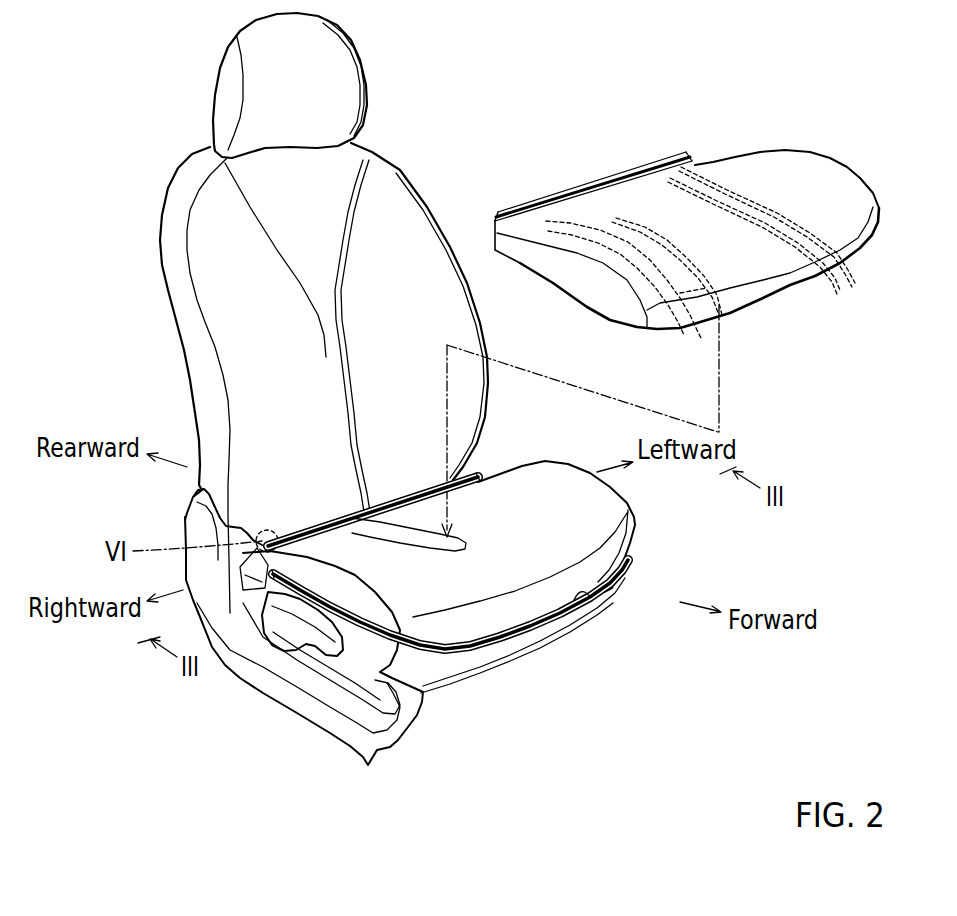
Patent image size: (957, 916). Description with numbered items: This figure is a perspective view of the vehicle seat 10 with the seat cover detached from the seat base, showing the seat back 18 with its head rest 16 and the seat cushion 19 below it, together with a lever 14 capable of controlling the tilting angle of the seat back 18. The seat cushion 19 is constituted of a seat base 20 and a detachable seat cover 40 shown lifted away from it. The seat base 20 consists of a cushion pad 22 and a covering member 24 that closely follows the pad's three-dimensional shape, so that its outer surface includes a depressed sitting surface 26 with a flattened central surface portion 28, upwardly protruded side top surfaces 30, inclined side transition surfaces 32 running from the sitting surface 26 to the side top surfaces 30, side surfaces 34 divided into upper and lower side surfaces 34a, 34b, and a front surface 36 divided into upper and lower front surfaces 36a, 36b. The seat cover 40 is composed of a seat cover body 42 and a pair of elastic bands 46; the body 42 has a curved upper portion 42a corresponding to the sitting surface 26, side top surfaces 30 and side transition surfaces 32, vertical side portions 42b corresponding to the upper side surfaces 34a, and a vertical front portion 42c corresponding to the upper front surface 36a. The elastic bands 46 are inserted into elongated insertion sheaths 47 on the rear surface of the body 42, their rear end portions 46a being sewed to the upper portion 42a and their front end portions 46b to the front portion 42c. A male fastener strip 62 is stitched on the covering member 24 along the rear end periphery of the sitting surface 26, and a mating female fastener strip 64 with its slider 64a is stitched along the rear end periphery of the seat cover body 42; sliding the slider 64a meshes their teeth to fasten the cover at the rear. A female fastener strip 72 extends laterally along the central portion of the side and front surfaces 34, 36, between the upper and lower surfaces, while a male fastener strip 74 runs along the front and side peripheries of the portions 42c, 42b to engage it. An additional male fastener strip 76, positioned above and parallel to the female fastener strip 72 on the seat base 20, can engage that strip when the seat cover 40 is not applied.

The vehicle seat 10 is at (475, 96).
The lever 14 is at (277, 632).
The head rest 16 is at (230, 75).
The seat back 18 is at (192, 323).
The seat cushion 19 is at (555, 444).
The seat base 20 is at (727, 497).
The cushion pad 22 is at (597, 542).
The covering member 24 is at (580, 507).
The sitting surface 26 is at (452, 580).
The central surface portion 28 is at (568, 597).
The side top surfaces 30 is at (573, 465).
The side transition surfaces 32 is at (537, 468).
The side surfaces 34 is at (245, 800).
The upper side surface 34a is at (307, 643).
The lower side surface 34b is at (356, 662).
The front surface 36 is at (580, 750).
The upper front surface 36a is at (492, 633).
The lower front surface 36b is at (527, 655).
The seat cover 40 is at (800, 170).
The seat cover body 42 is at (662, 239).
The curved upper portion 42a is at (717, 263).
The vertical side portions 42b is at (591, 297).
The vertical front portion 42c is at (795, 295).
The elastic bands 46 is at (613, 228).
The rear end portions 46a is at (548, 220).
The front end portions 46b is at (700, 340).
The elongated insertion sheaths 47 is at (587, 203).
The male fastener strip 62 is at (270, 530).
The female fastener strip 64 is at (513, 213).
The slider 64a is at (494, 221).
The female fastener strip 72 is at (560, 620).
The male fastener strip 74 is at (776, 302).
The additional male fastener strip 76 is at (595, 593).